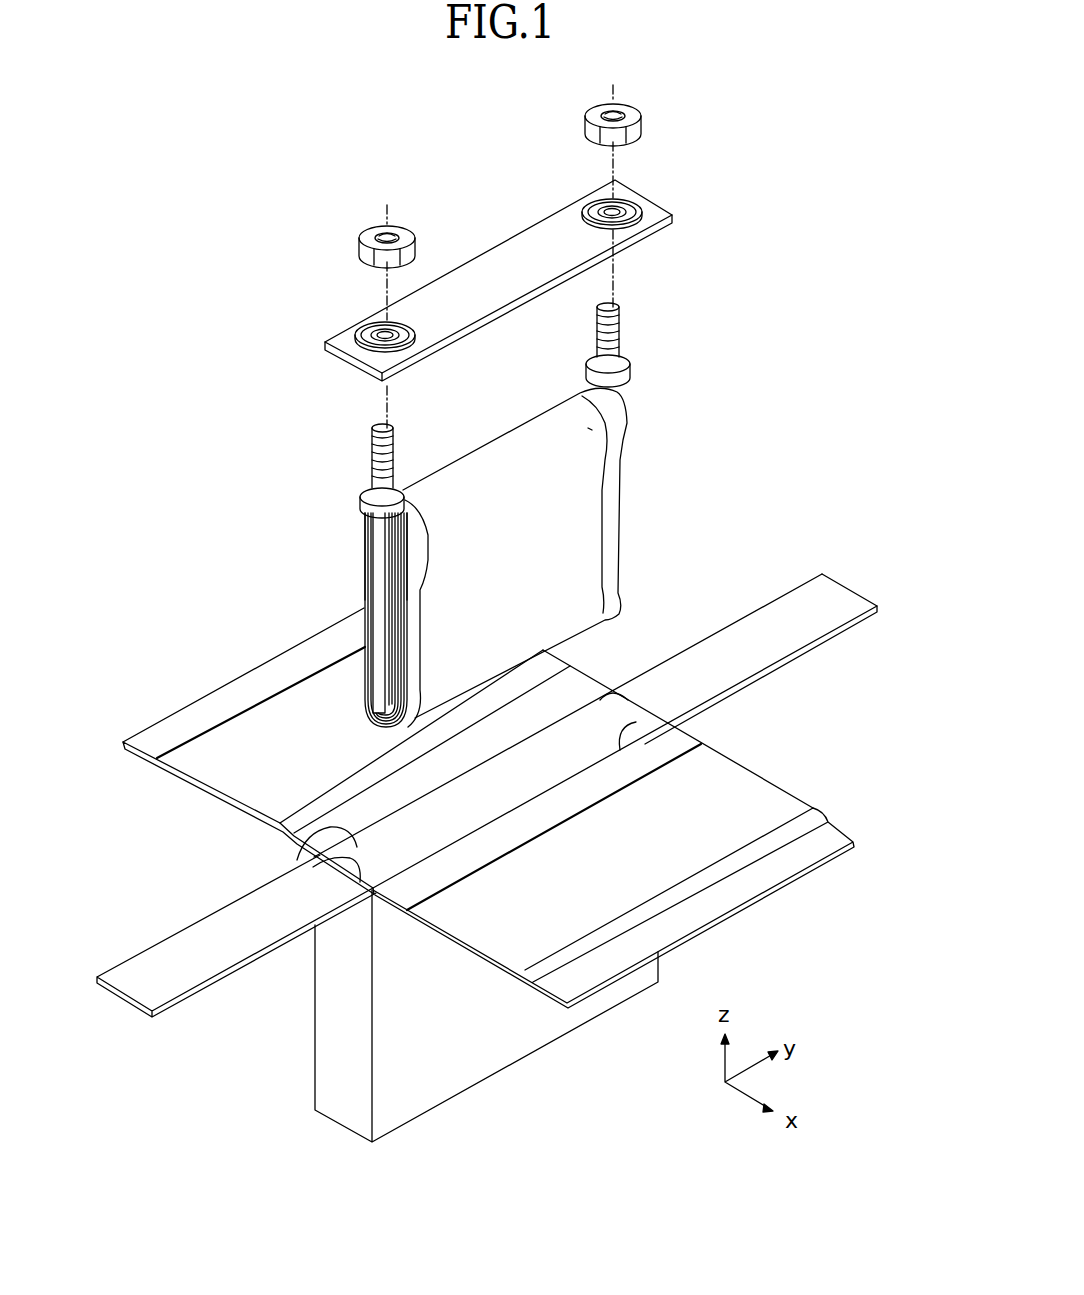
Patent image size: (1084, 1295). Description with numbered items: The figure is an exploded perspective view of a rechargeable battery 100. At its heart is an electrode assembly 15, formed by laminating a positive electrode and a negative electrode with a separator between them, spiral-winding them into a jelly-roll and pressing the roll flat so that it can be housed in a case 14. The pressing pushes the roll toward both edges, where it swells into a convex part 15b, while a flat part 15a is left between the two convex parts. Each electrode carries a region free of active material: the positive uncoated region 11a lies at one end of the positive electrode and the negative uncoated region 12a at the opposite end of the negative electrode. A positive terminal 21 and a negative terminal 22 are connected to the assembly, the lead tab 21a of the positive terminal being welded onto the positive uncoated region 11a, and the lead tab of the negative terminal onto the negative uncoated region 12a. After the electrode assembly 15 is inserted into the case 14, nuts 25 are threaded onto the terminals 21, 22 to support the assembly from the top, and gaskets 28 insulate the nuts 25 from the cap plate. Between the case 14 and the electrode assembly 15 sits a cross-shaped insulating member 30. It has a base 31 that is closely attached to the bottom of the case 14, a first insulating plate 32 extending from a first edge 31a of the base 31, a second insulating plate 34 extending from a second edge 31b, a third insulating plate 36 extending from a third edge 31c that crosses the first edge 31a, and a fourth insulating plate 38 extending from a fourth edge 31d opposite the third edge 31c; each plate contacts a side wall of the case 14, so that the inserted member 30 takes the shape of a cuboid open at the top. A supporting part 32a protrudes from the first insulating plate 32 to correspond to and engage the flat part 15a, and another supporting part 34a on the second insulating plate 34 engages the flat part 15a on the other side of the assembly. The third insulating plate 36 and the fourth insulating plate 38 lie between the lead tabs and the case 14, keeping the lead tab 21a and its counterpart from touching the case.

The rechargeable battery 100 is at (447, 190).
The nuts 25 is at (586, 128).
The gaskets 28 is at (630, 196).
The negative terminal 22 is at (624, 338).
The positive terminal 21 is at (370, 430).
The electrode assembly 15 is at (555, 553).
The convex part 15b is at (590, 430).
The negative uncoated region 12a is at (615, 474).
The flat part 15a is at (440, 560).
The positive uncoated region 11a is at (413, 583).
The lead tab 21a is at (377, 627).
The insulating member 30 is at (757, 600).
The base 31 is at (573, 740).
The first edge 31a is at (282, 852).
The second edge 31b is at (660, 726).
The third edge 31c is at (313, 867).
The fourth edge 31d is at (630, 697).
The first insulating plate 32 is at (248, 690).
The supporting part 32a is at (247, 778).
The second insulating plate 34 is at (712, 908).
The supporting part 34a is at (753, 790).
The third insulating plate 36 is at (178, 985).
The fourth insulating plate 38 is at (795, 640).
The case 14 is at (480, 1065).